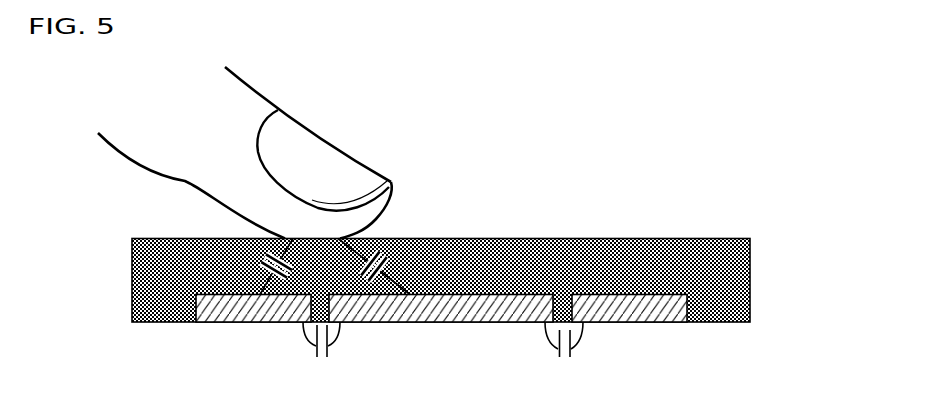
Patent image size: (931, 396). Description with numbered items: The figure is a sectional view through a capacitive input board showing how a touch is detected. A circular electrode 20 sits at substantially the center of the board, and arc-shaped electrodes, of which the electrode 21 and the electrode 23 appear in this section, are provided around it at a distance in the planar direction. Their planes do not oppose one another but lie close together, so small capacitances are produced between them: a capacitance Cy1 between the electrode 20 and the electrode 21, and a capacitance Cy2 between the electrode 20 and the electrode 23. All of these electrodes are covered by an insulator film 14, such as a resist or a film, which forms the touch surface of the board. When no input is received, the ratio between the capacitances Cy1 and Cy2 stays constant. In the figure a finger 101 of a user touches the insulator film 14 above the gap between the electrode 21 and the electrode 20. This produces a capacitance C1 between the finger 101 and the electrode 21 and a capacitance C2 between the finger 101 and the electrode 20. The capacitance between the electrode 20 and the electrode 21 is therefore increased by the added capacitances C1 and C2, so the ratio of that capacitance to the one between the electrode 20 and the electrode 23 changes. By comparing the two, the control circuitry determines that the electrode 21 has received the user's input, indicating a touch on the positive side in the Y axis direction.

The finger 101 is at (257, 93).
The insulator film 14 is at (737, 238).
The electrode 21 is at (210, 322).
The electrode 20 is at (437, 322).
The electrode 23 is at (679, 322).
The capacitance C1 is at (260, 267).
The capacitance C2 is at (379, 267).
The capacitance Cy1 is at (321, 353).
The capacitance Cy2 is at (564, 353).